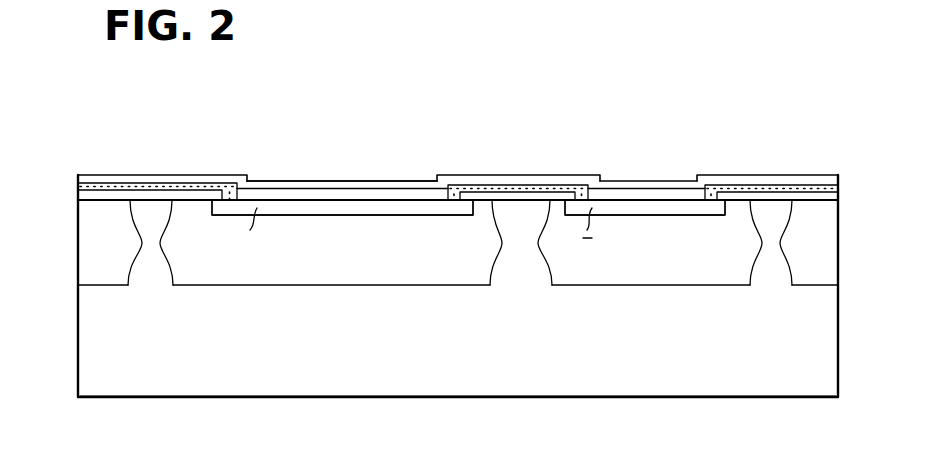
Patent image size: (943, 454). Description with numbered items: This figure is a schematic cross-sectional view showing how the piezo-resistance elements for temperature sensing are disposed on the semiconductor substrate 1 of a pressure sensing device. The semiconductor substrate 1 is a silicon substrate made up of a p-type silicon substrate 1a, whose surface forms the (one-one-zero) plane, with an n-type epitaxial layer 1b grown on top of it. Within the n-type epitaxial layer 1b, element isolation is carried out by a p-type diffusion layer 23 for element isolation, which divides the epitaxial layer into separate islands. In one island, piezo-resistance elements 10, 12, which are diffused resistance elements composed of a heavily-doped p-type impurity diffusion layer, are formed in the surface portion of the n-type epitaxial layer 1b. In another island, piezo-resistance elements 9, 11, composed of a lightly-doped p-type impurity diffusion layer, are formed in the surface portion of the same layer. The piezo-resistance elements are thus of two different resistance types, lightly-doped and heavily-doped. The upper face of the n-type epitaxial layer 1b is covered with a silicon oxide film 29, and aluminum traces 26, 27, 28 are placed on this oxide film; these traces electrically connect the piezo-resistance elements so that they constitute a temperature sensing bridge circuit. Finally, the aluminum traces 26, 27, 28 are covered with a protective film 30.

The semiconductor substrate 1 is at (838, 327).
The p-type silicon substrate 1a is at (827, 370).
The n-type epitaxial layer 1b is at (827, 247).
The piezo-resistance element 9 is at (667, 212).
The piezo-resistance element 11 is at (667, 212).
The piezo-resistance element 10 is at (392, 207).
The piezo-resistance element 12 is at (392, 207).
The p-type diffusion layer for element isolation 23 is at (155, 255).
The aluminum trace 26 is at (208, 183).
The aluminum trace 27 is at (537, 187).
The aluminum trace 28 is at (762, 183).
The silicon oxide film 29 is at (117, 196).
The protective film 30 is at (398, 187).